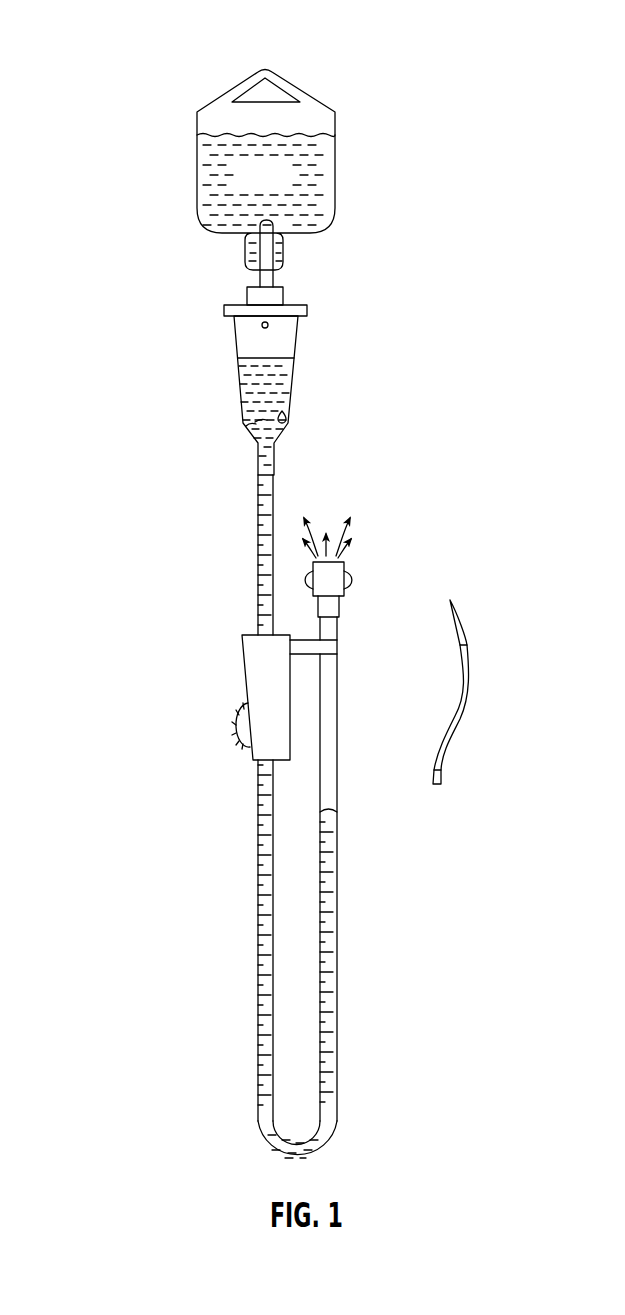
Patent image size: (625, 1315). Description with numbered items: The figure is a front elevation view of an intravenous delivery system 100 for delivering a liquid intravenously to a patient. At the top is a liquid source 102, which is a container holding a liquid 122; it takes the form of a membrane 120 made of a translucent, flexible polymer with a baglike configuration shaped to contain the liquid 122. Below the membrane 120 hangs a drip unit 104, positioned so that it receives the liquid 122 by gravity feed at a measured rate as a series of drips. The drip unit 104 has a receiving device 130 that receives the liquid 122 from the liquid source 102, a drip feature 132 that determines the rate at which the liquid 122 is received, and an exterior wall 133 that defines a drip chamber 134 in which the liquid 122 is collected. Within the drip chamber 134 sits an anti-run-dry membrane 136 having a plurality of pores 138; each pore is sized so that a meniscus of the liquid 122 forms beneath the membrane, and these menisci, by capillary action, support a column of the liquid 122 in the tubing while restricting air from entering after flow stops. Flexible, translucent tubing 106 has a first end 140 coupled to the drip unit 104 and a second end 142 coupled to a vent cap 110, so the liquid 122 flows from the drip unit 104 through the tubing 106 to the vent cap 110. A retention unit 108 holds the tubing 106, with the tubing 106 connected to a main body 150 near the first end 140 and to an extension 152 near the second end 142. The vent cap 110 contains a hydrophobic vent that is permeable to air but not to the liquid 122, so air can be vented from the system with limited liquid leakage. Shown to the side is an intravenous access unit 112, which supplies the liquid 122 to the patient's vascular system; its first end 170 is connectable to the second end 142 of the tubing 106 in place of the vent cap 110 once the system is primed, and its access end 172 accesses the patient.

The intravenous delivery system 100 is at (117, 36).
The liquid source 102 is at (355, 138).
The drip unit 104 is at (330, 371).
The tubing 106 is at (243, 827).
The retention unit 108 is at (210, 675).
The vent cap 110 is at (334, 580).
The intravenous access unit 112 is at (489, 672).
The membrane 120 is at (207, 123).
The liquid 122 is at (285, 192).
The receiving device 130 is at (252, 254).
The drip feature 132 is at (240, 318).
The exterior wall 133 is at (297, 342).
The drip chamber 134 is at (250, 408).
The anti-run-dry membrane 136 is at (279, 415).
The pores 138 is at (258, 426).
The first end 140 is at (258, 521).
The second end 142 is at (332, 624).
The main body 150 is at (248, 653).
The extension 152 is at (327, 648).
The first end 170 is at (443, 776).
The access end 172 is at (466, 632).